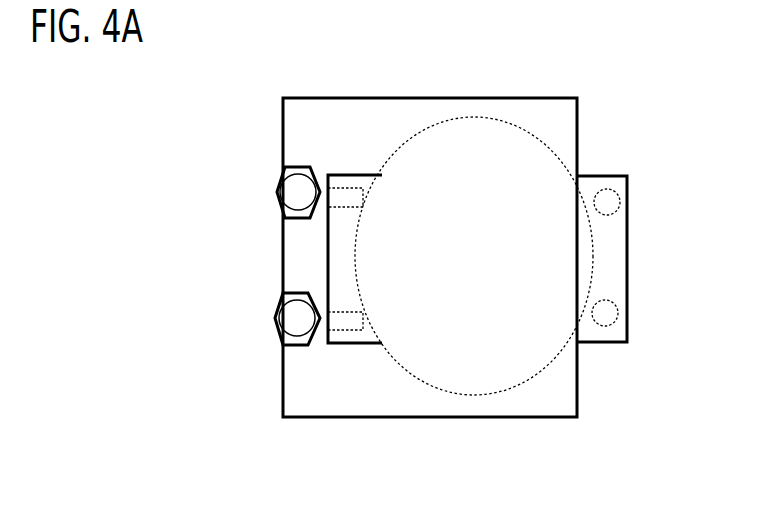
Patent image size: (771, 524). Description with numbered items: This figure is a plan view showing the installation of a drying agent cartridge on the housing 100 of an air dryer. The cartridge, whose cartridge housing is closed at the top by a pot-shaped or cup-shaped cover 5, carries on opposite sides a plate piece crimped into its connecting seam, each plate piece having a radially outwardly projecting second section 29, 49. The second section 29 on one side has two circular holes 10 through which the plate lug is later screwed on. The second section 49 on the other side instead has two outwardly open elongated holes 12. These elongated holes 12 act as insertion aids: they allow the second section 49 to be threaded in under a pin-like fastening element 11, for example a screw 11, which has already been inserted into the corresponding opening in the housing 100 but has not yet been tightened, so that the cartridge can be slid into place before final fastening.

The housing 100 is at (303, 388).
The second section 49 is at (363, 198).
The elongated holes 12 is at (338, 200).
The second section 29 is at (588, 190).
The circular holes 10 is at (610, 203).
The fastening element 11 is at (293, 192).
The cover 5 is at (483, 345).